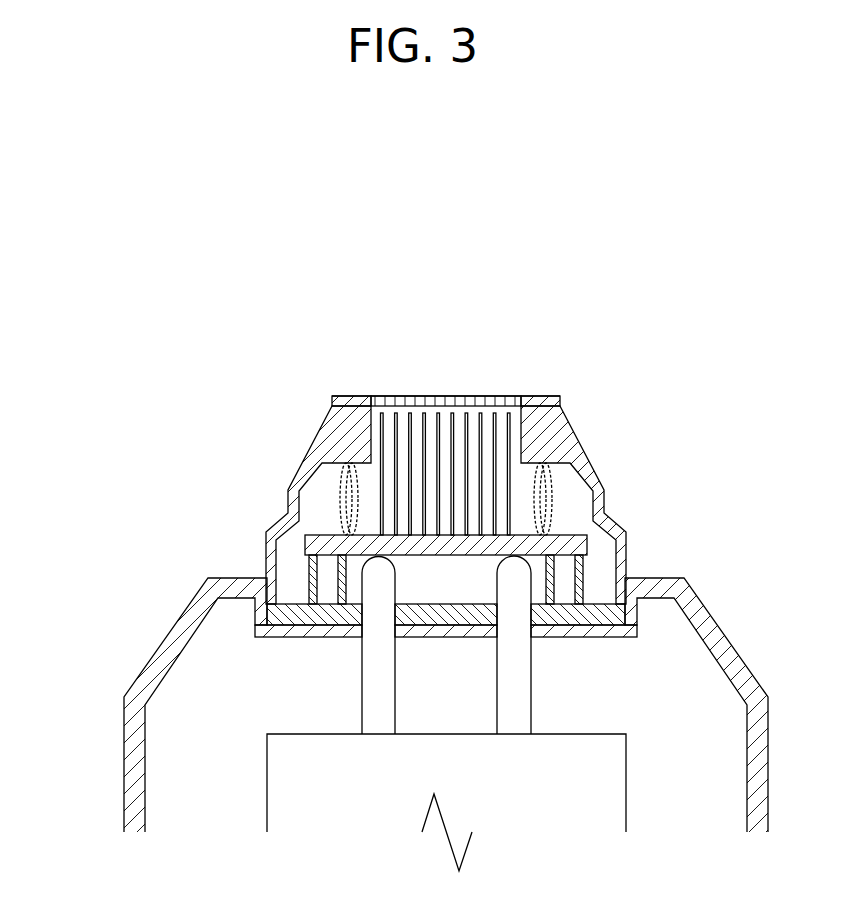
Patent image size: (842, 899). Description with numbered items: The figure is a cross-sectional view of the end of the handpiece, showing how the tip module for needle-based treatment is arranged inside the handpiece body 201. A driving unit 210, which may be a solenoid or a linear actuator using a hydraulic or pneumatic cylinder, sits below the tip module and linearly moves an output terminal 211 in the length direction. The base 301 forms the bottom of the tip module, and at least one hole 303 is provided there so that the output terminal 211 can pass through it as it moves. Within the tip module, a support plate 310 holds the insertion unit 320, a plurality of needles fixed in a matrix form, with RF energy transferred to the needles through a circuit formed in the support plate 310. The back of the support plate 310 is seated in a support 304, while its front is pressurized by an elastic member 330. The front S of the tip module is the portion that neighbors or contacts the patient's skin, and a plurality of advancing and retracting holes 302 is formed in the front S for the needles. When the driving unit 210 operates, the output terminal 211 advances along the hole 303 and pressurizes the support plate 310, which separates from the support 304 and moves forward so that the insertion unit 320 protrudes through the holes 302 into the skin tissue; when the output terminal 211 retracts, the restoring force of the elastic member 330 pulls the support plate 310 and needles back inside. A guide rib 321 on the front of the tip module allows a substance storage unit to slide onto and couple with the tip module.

The handpiece body 201 is at (132, 739).
The driving unit 210 is at (523, 822).
The output terminal 211 is at (362, 702).
The base 301 is at (296, 604).
The hole 303 is at (358, 618).
The support 304 is at (310, 567).
The support plate 310 is at (322, 538).
The insertion unit 320 is at (380, 422).
The advancing and retracting holes 302 is at (382, 400).
The guide rib 321 is at (561, 401).
The elastic member 330 is at (343, 498).
The front S is at (527, 395).